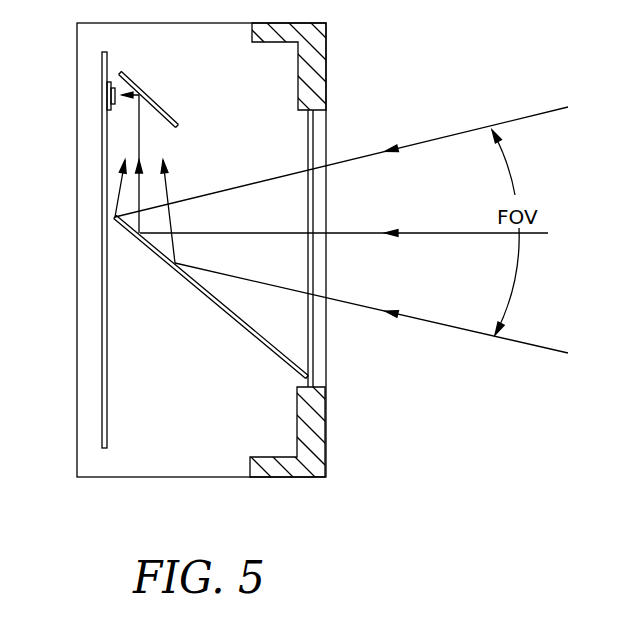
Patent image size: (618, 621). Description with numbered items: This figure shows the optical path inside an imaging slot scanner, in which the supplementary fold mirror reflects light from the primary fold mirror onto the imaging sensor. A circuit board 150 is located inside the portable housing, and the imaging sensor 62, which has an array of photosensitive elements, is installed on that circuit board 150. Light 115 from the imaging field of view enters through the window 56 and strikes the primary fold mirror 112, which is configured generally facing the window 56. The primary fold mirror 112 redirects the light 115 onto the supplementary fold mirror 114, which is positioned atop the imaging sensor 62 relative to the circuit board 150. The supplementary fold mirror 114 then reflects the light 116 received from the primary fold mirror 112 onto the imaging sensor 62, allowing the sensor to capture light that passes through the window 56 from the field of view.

The window 56 is at (319, 123).
The imaging sensor 62 is at (107, 87).
The primary fold mirror 112 is at (230, 313).
The supplementary fold mirror 114 is at (157, 104).
The light 115 is at (423, 232).
The light 116 is at (140, 145).
The circuit board 150 is at (102, 400).